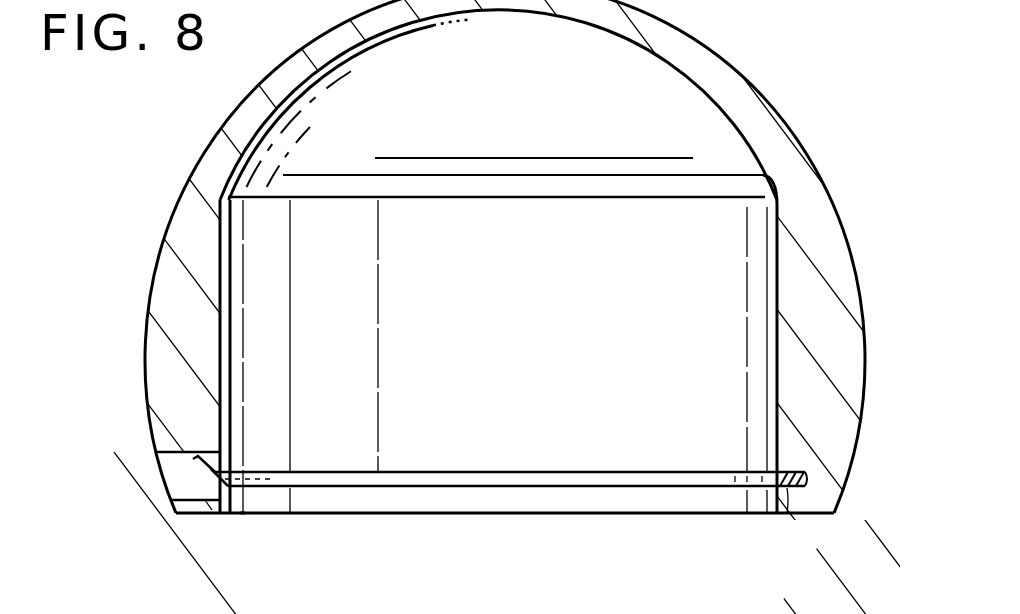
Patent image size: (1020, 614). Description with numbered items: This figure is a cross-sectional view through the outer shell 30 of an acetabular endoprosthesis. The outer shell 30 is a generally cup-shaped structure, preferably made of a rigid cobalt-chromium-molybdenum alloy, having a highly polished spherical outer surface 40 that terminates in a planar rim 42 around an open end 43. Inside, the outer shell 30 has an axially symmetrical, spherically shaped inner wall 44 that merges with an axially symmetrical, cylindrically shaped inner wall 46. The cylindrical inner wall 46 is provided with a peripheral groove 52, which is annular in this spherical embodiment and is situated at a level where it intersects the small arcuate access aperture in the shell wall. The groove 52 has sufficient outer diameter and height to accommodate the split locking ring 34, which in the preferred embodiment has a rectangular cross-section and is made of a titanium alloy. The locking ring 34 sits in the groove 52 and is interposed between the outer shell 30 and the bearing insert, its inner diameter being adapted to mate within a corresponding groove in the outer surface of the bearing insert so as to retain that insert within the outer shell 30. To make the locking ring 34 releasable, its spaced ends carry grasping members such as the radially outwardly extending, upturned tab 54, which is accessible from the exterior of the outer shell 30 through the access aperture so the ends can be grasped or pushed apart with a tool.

The outer shell 30 is at (833, 216).
The spherically shaped inner wall 44 is at (510, 307).
The spherical outer surface 40 is at (150, 277).
The cylindrically shaped inner wall 46 is at (777, 361).
The peripheral groove 52 is at (813, 476).
The grasping member 54 is at (198, 470).
The planar rim 42 is at (197, 516).
The open end 43 is at (318, 515).
The locking ring 34 is at (787, 491).